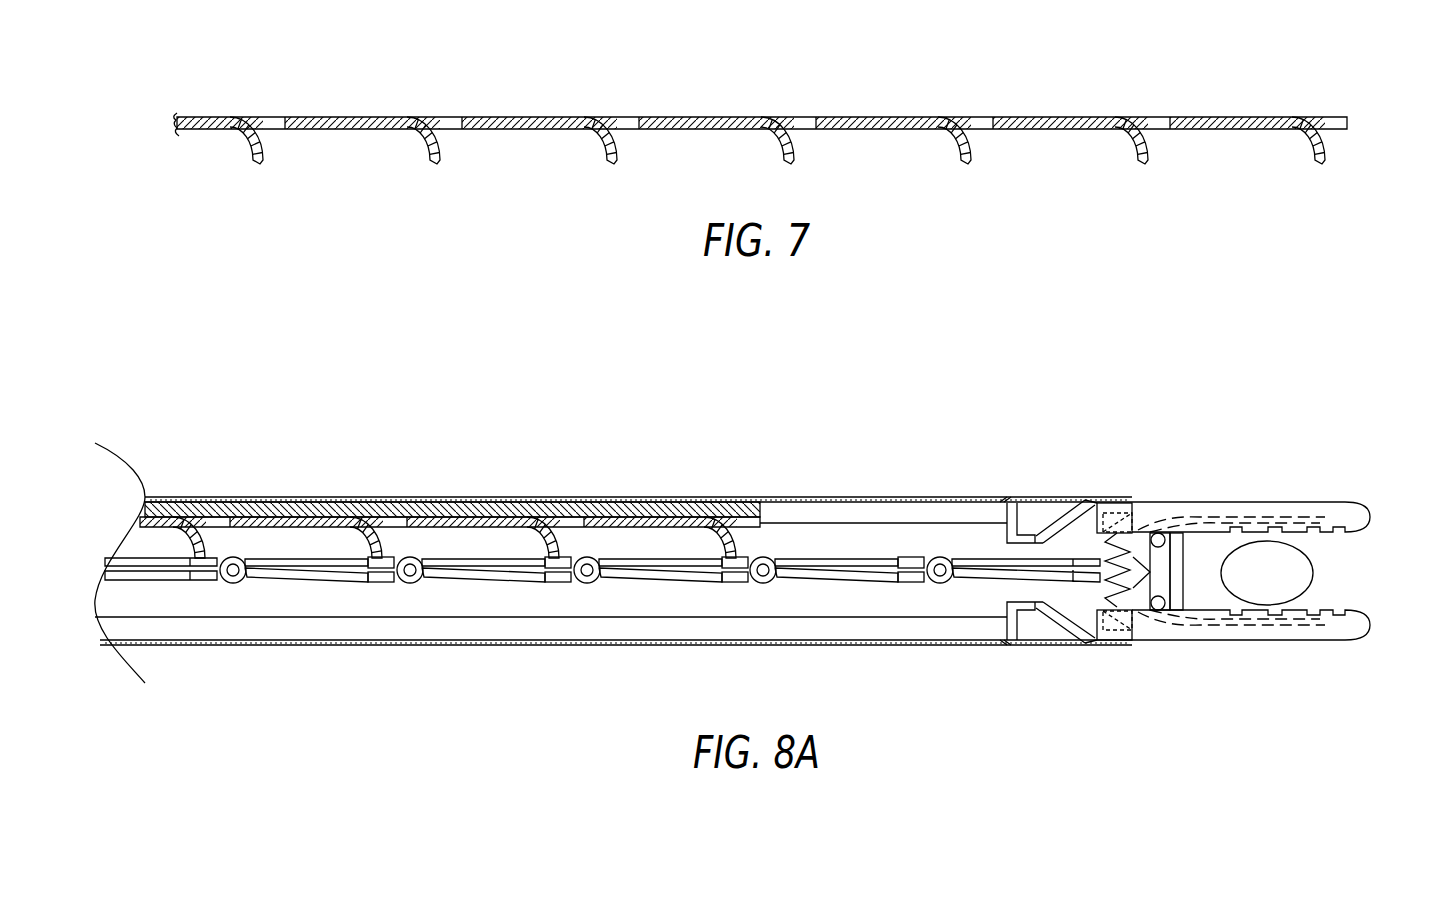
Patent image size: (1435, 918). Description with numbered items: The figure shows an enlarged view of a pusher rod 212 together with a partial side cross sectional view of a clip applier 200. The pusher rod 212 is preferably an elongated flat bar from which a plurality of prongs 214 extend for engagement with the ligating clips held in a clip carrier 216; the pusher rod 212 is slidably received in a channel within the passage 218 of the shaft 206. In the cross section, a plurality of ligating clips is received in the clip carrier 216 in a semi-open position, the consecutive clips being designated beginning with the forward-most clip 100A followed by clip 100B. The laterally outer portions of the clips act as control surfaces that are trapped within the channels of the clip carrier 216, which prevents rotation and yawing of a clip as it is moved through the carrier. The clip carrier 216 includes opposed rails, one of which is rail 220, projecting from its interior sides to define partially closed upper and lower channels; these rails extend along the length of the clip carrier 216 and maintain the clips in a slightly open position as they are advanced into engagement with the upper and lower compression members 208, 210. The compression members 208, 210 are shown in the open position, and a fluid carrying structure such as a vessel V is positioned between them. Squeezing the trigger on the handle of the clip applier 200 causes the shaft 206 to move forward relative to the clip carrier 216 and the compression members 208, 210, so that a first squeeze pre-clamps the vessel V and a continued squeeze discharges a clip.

In FIG. 7, the pusher rod 212 is at (1327, 119).
In FIG. 7, the prongs 214 is at (1323, 143).
In FIG. 8A, the prongs 214 is at (760, 517).
In FIG. 8A, the clip applier 200 is at (262, 447).
In FIG. 8A, the shaft 206 is at (840, 500).
In FIG. 8A, the upper compression member 208 is at (1285, 502).
In FIG. 8A, the lower compression member 210 is at (1293, 640).
In FIG. 8A, the clip carrier 216 is at (1172, 545).
In FIG. 8A, the passage 218 is at (585, 627).
In FIG. 8A, the rail 220 is at (733, 575).
In FIG. 8A, the forward-most ligating clip 100A is at (990, 582).
In FIG. 8A, the second ligating clip 100B is at (858, 559).
In FIG. 8A, the vessel V is at (1313, 573).